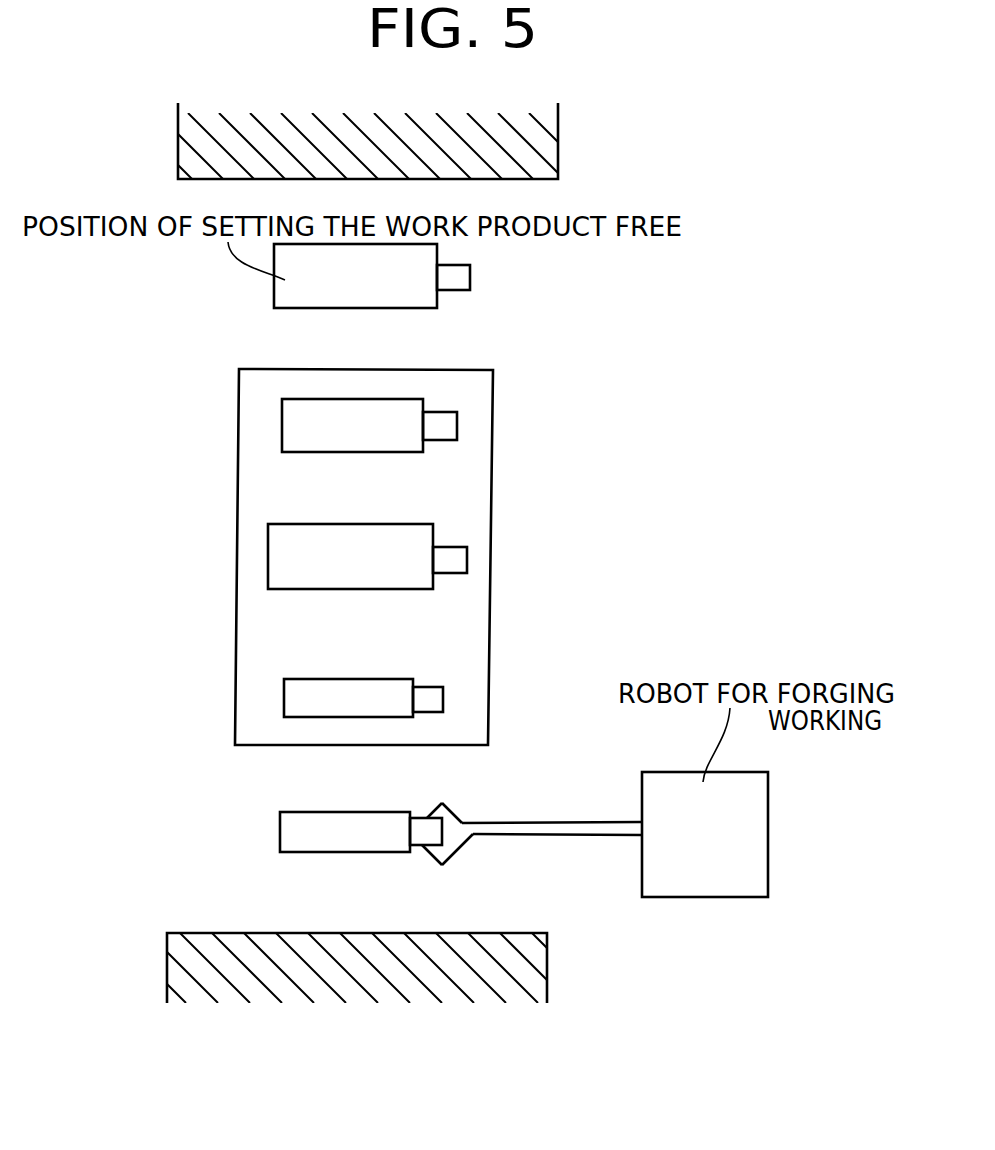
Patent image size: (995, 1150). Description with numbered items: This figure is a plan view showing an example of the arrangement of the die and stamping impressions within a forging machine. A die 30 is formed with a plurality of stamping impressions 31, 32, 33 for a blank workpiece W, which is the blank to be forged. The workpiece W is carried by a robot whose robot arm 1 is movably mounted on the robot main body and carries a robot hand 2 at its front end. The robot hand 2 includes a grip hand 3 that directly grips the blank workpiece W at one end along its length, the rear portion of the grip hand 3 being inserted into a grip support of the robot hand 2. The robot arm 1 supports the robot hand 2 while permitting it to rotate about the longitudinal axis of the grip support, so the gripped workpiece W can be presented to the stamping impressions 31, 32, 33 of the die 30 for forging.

The robot arm 1 is at (614, 836).
The robot hand 2 is at (578, 824).
The grip hand 3 is at (452, 853).
The blank workpiece W is at (290, 836).
The die 30 is at (483, 505).
The stamping impression 31 is at (290, 698).
The stamping impression 32 is at (287, 423).
The stamping impression 33 is at (277, 557).